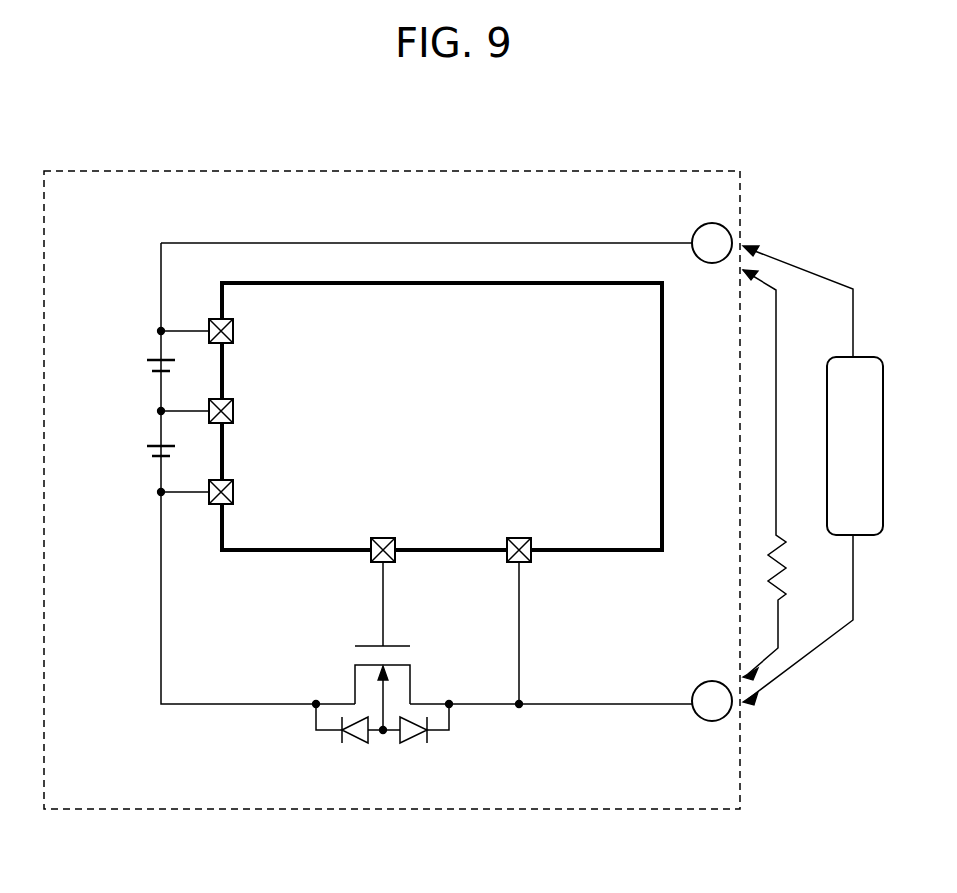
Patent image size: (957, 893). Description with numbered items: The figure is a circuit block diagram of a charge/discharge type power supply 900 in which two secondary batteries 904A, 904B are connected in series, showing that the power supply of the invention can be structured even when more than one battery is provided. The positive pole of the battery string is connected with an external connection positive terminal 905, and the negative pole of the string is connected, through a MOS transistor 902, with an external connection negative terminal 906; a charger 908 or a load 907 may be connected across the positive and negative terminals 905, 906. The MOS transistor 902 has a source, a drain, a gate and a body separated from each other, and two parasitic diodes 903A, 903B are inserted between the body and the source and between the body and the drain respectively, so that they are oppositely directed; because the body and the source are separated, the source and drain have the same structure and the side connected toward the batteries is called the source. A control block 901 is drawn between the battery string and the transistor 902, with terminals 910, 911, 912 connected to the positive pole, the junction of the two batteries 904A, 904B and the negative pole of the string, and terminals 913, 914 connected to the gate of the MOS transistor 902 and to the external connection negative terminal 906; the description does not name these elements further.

The charge/discharge type power supply 900 is at (383, 171).
The protection circuit / control IC 901 is at (268, 282).
The MOS transistor 902 is at (415, 677).
The parasitic diode 903A is at (350, 752).
The parasitic diode 903B is at (418, 748).
The secondary battery 904A is at (145, 370).
The secondary battery 904B is at (147, 455).
The external connection positive terminal 905 is at (700, 228).
The external connection negative terminal 906 is at (703, 718).
The load 907 is at (770, 562).
The charger 908 is at (885, 422).
The terminal pad 910 is at (234, 329).
The terminal pad 911 is at (234, 408).
The terminal pad 912 is at (234, 489).
The terminal pad 913 is at (381, 537).
The terminal pad 914 is at (519, 537).